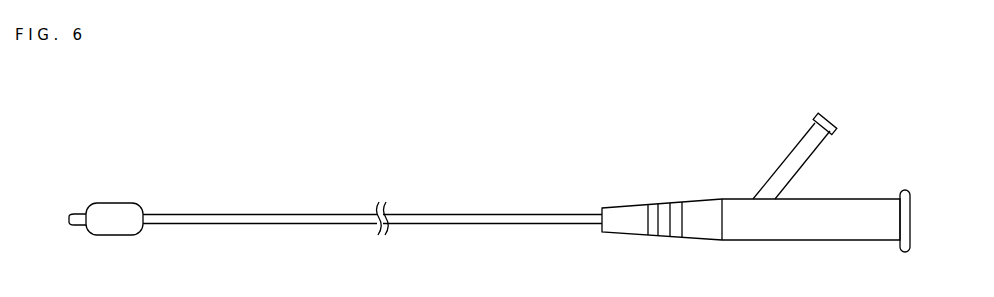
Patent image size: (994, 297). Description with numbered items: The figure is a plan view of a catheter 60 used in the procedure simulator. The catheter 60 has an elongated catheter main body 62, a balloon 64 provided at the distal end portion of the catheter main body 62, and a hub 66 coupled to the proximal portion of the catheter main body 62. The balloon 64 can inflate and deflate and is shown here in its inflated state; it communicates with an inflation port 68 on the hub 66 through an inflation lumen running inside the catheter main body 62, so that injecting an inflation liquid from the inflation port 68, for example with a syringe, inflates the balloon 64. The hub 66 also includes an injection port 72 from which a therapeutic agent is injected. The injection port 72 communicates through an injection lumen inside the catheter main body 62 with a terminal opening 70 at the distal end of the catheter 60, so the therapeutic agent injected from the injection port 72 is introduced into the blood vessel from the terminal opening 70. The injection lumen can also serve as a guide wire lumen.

The catheter 60 is at (350, 108).
The catheter main body 62 is at (505, 214).
The balloon 64 is at (113, 218).
The hub 66 is at (846, 213).
The inflation port 68 is at (833, 117).
The terminal opening 70 is at (68, 220).
The injection port 72 is at (912, 208).